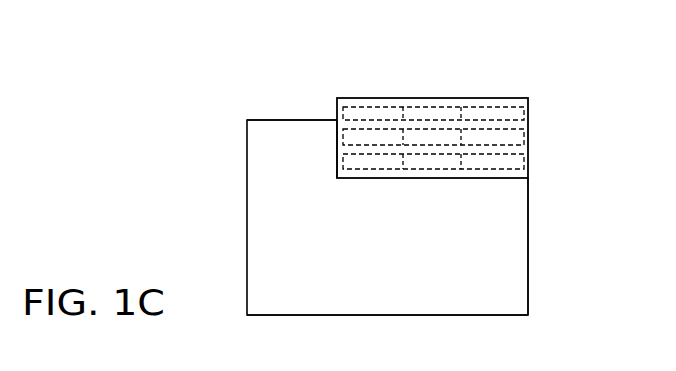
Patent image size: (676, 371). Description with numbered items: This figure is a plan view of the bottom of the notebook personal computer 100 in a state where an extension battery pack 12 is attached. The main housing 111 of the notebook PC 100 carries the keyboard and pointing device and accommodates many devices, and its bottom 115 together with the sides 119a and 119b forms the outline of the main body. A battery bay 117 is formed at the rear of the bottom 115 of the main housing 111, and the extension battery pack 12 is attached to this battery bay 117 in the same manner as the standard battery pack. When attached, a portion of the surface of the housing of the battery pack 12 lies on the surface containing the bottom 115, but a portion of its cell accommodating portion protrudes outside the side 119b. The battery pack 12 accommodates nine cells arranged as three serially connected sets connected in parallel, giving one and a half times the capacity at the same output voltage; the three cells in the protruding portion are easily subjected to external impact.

The notebook personal computer 100 is at (315, 102).
The extension battery pack 12 is at (431, 98).
The main housing 111 is at (247, 150).
The bottom 115 is at (293, 305).
The battery bay 117 is at (337, 150).
The side 119a is at (529, 302).
The side 119b is at (263, 120).